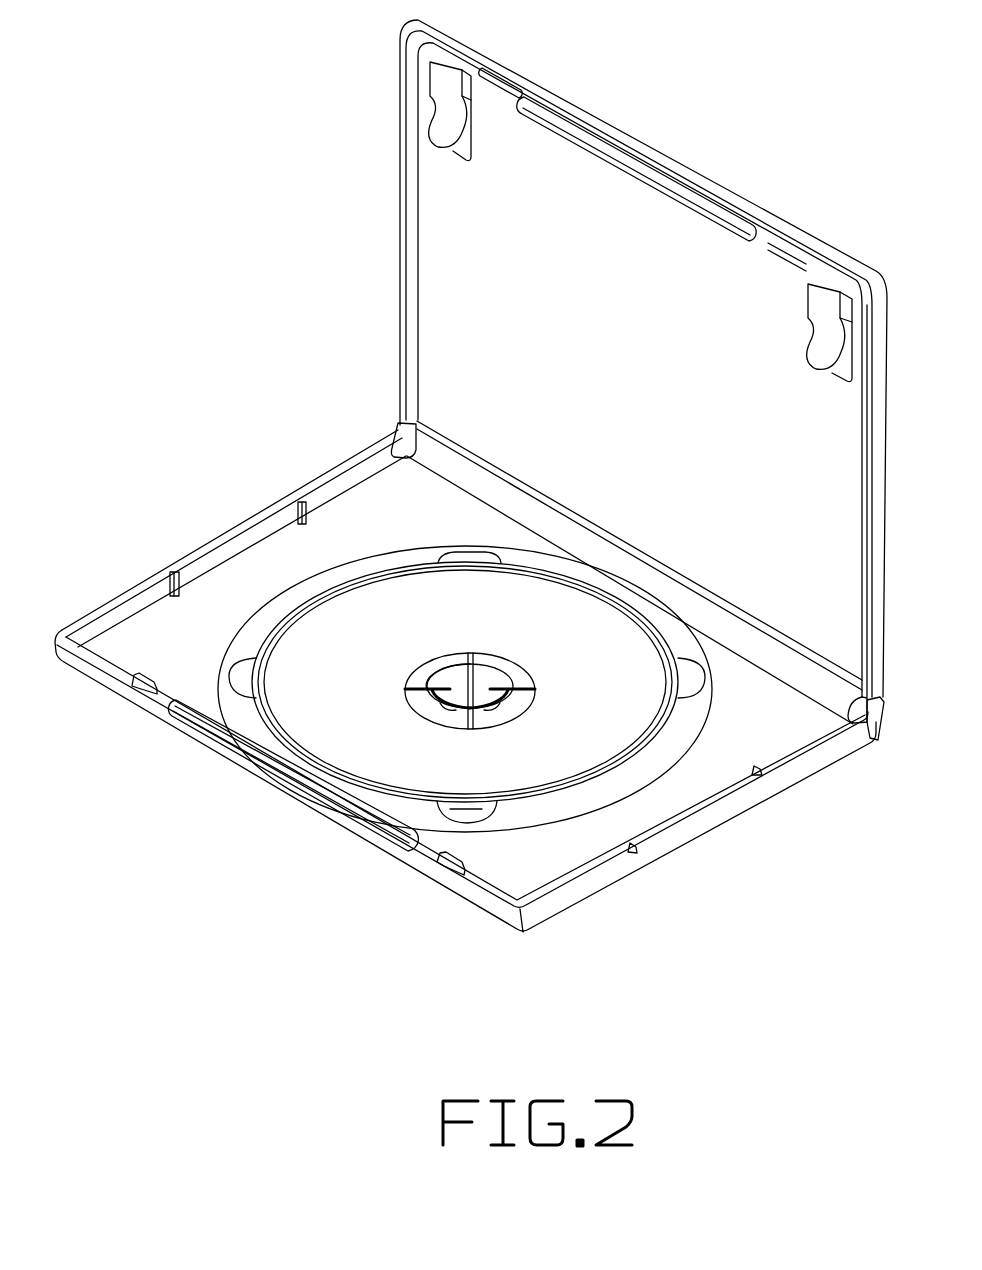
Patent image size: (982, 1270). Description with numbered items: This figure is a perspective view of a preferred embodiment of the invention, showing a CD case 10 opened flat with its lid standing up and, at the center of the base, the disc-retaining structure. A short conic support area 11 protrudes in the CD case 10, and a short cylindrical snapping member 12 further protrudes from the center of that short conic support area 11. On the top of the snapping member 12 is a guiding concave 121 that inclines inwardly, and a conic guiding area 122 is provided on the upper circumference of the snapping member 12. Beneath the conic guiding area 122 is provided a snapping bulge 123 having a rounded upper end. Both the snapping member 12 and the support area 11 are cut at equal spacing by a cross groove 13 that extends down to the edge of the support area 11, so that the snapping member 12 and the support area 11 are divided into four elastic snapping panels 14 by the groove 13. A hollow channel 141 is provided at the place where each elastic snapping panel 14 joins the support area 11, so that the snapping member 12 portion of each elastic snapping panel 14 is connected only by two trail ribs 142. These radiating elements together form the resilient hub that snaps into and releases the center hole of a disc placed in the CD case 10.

The CD case 10 is at (324, 460).
The short conic support area 11 is at (435, 672).
The short cylindrical snapping member 12 is at (457, 665).
The guiding concave 121 is at (530, 690).
The conic guiding area 122 is at (468, 704).
The snapping bulge 123 is at (456, 704).
The cross groove 13 is at (448, 699).
The elastic snapping panel 14 is at (500, 694).
The hollow channel 141 is at (490, 698).
The trail rib 142 is at (473, 700).